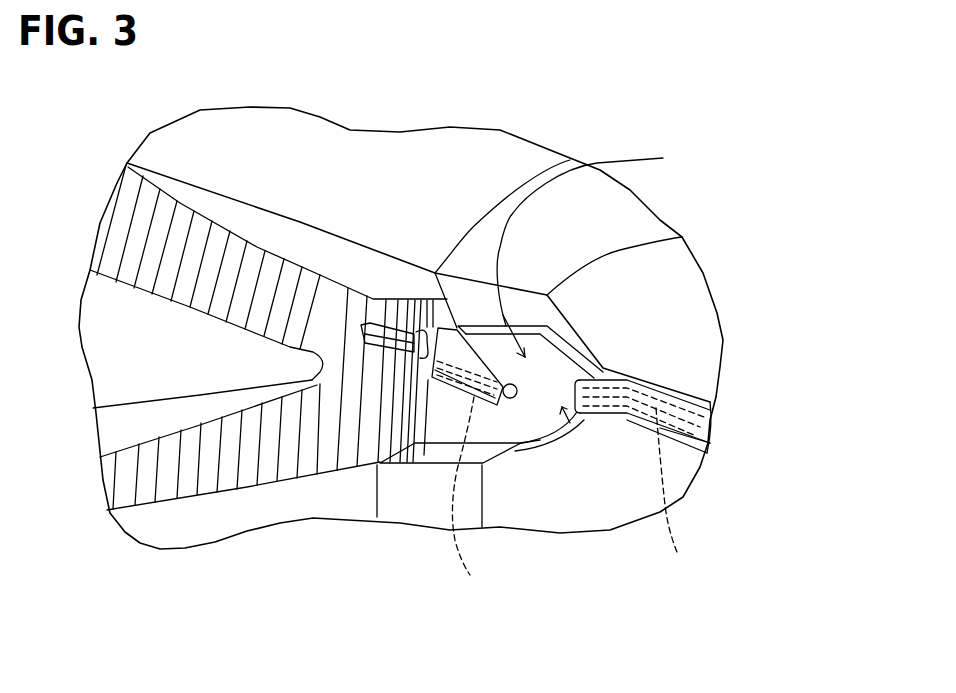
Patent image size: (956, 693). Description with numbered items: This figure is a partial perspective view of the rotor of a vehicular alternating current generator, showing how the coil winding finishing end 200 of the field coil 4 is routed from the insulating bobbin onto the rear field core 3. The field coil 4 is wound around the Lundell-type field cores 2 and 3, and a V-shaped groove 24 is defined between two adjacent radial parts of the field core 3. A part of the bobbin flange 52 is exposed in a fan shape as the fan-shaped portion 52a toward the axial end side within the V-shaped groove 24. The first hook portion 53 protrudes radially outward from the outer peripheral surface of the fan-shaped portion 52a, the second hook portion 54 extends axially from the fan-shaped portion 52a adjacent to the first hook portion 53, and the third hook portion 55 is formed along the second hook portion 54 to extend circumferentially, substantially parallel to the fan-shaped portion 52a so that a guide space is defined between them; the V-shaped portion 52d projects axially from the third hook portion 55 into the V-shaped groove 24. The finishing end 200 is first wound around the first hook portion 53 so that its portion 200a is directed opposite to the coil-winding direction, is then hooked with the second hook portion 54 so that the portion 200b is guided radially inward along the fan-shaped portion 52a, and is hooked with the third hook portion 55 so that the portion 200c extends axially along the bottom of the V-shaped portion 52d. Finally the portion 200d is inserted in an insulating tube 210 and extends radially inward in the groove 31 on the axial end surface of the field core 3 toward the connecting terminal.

The field core 2 is at (95, 343).
The field core 3 is at (401, 318).
The field coil 4 is at (133, 238).
The V-shaped groove 24 is at (565, 234).
The groove 31 is at (683, 445).
The flange 52 is at (405, 427).
The fan-shaped portion 52a is at (430, 412).
The V-shaped portion 52d is at (537, 353).
The first hook portion 53 is at (366, 323).
The second hook portion 54 is at (420, 330).
The third hook portion 55 is at (467, 353).
The coil winding finishing end 200 is at (553, 440).
The portion of the finishing end 200a is at (418, 340).
The portion of the finishing end 200b is at (470, 498).
The portion of the finishing end 200c is at (545, 442).
The portion of the finishing end 200d is at (677, 492).
The insulating tube 210 is at (700, 430).